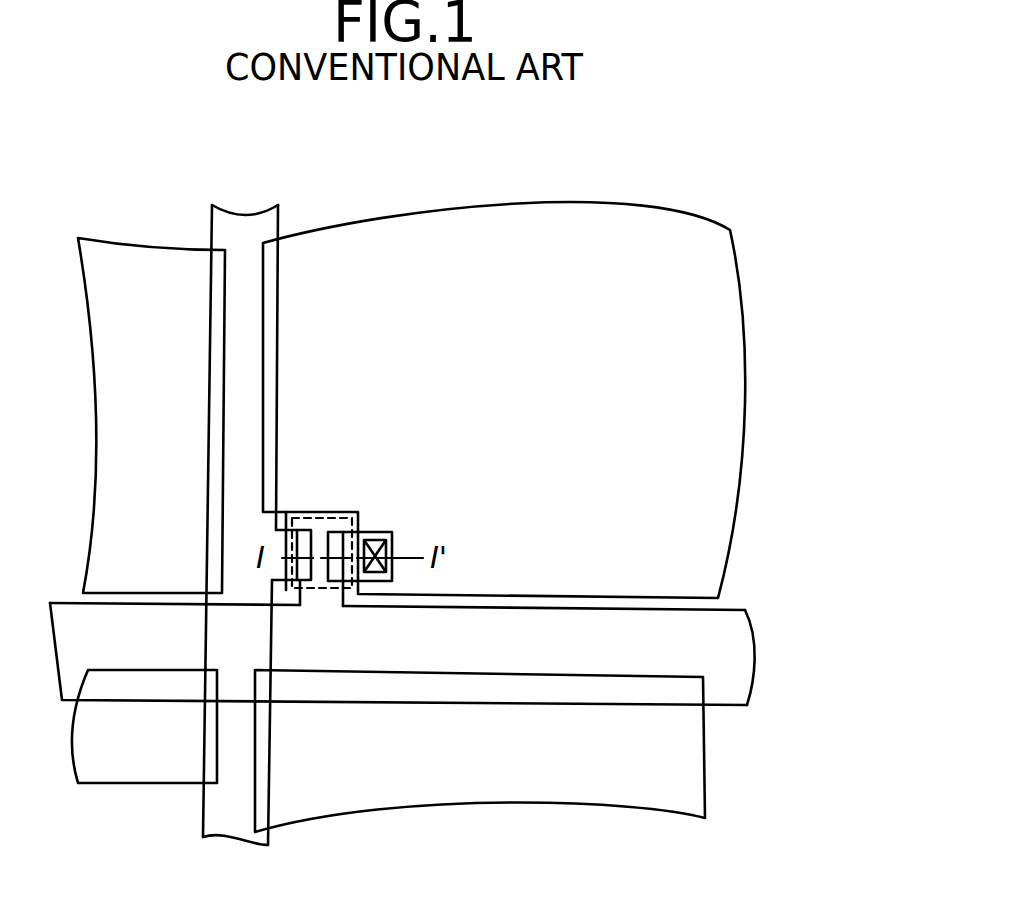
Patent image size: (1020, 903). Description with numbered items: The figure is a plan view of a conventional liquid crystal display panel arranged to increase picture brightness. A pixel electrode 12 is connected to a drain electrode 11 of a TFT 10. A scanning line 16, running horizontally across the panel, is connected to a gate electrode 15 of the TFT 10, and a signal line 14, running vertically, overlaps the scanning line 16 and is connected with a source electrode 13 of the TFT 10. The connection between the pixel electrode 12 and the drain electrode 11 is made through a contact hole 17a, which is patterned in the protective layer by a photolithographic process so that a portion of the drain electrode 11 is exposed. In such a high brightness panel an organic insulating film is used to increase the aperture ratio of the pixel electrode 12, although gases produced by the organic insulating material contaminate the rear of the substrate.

The TFT 10 is at (343, 514).
The drain electrode 11 is at (390, 581).
The pixel electrode 12 is at (728, 312).
The source electrode 13 is at (303, 574).
The signal line 14 is at (245, 305).
The gate electrode 15 is at (317, 541).
The scanning line 16 is at (745, 617).
The contact hole 17a is at (393, 545).